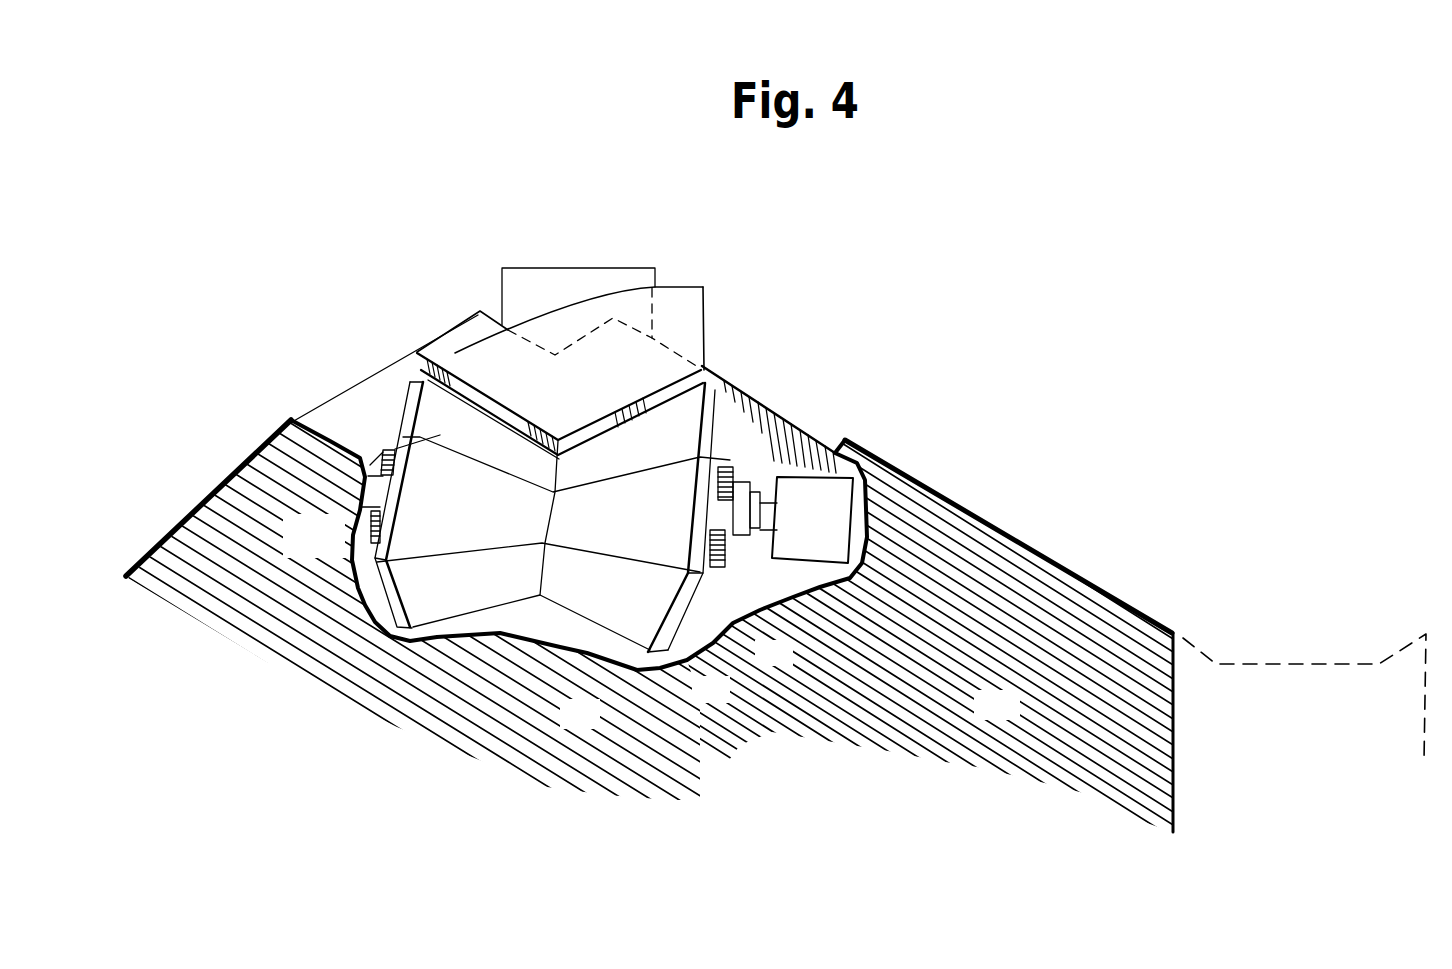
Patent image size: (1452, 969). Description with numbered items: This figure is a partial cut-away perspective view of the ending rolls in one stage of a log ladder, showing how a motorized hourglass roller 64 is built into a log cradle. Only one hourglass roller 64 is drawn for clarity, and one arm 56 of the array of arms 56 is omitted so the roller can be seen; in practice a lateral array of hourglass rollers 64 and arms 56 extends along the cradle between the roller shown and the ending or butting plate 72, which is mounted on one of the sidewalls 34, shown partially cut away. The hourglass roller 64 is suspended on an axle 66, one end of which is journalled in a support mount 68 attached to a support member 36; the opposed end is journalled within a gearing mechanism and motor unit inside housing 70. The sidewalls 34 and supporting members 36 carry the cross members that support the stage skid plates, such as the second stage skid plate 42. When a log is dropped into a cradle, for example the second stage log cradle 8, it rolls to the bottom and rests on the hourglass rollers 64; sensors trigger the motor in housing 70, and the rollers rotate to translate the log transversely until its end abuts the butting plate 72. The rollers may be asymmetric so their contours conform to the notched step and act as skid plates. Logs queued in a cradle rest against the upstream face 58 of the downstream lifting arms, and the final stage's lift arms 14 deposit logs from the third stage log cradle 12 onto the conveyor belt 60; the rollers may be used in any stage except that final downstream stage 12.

The second stage log cradle 8 is at (232, 428).
The third stage log cradle 12 is at (576, 400).
The third stage lift arms 14 is at (475, 365).
The sidewall 34 is at (940, 628).
The supporting member 36 is at (780, 417).
The second stage skid plate 42 is at (199, 511).
The lifting arm 56 is at (707, 307).
The upstream face 58 is at (667, 284).
The conveyor belt 60 is at (1245, 663).
The hourglass roller 64 is at (600, 635).
The axle 66 is at (370, 512).
The support mount 68 is at (389, 448).
The housing 70 is at (793, 520).
The butting plate 72 is at (531, 267).